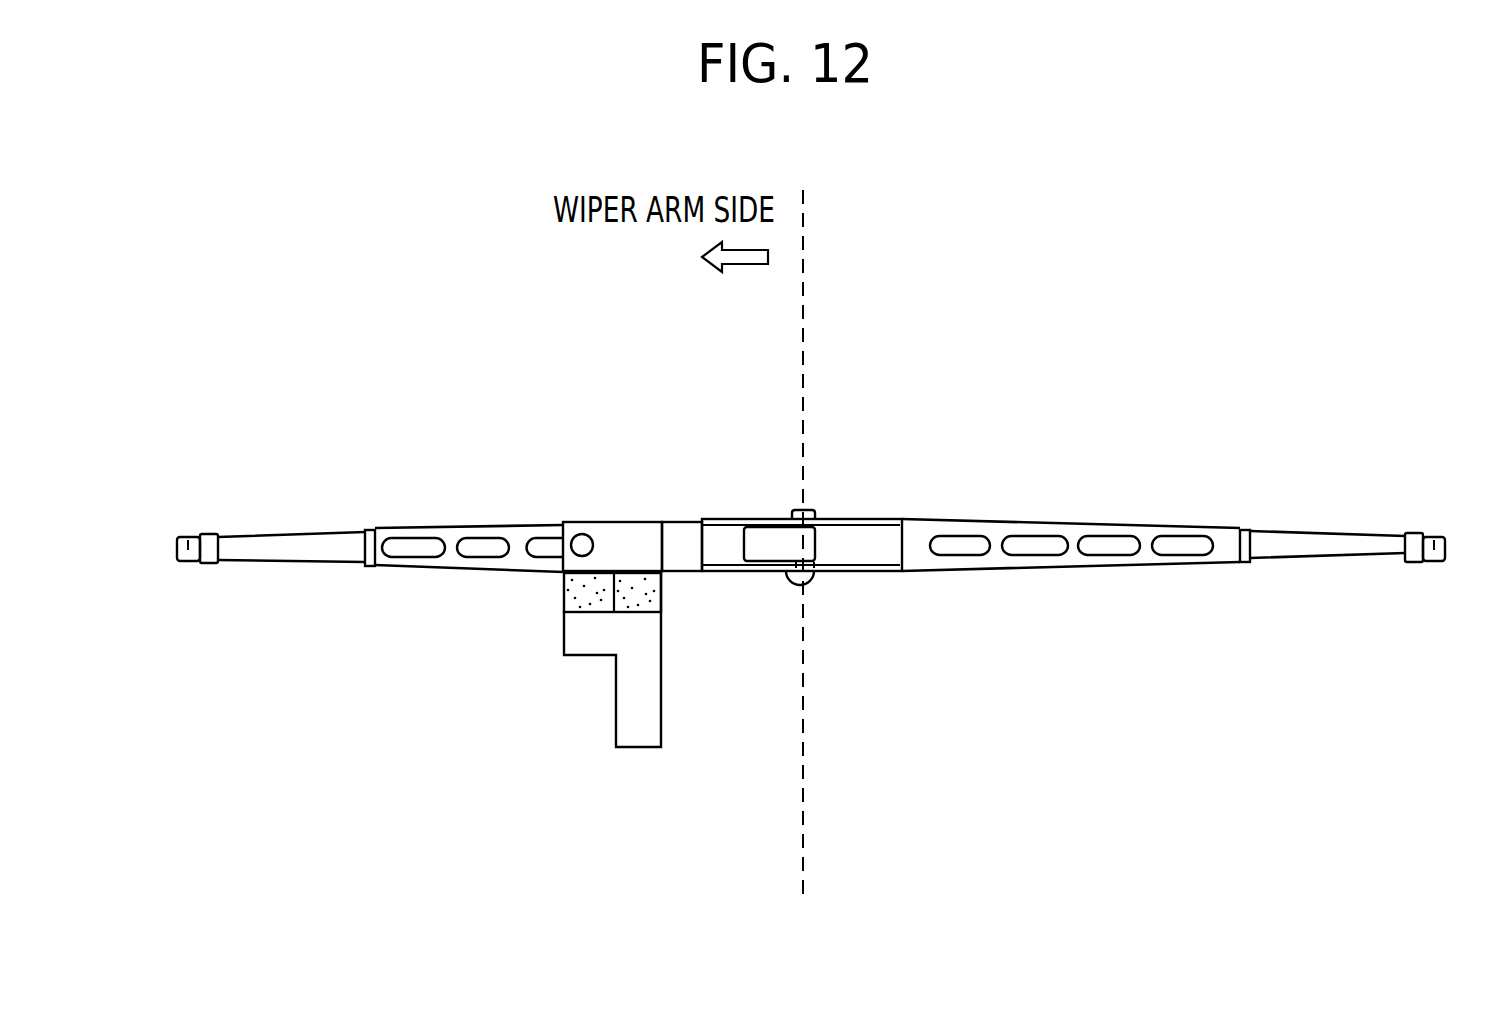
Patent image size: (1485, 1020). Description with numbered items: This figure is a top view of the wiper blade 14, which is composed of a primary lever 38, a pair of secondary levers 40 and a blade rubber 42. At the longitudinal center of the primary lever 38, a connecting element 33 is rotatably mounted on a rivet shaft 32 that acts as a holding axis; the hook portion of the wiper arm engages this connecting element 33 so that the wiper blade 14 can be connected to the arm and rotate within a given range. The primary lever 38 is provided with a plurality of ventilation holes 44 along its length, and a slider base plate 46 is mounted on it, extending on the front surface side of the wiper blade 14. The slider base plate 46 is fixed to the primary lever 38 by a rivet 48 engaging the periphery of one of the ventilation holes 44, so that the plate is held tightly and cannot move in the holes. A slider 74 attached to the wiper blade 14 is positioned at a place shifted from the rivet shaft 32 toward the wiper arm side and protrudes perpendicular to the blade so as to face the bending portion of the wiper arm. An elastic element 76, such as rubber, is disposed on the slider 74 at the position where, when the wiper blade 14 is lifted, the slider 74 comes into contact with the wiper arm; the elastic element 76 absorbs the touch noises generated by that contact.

The wiper blade 14 is at (893, 478).
The rivet shaft 32 is at (810, 510).
The connecting element 33 is at (748, 535).
The primary lever 38 is at (447, 540).
The secondary levers 40 is at (332, 536).
The blade rubber 42 is at (192, 536).
The ventilation holes 44 is at (503, 542).
The slider base plate 46 is at (630, 532).
The rivet 48 is at (582, 540).
The slider 74 is at (651, 722).
The elastic element 76 is at (637, 595).